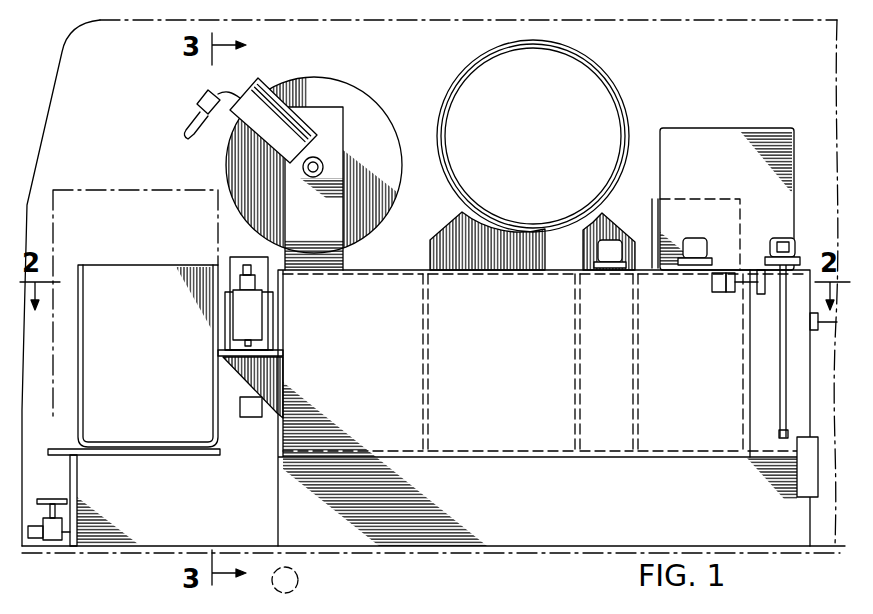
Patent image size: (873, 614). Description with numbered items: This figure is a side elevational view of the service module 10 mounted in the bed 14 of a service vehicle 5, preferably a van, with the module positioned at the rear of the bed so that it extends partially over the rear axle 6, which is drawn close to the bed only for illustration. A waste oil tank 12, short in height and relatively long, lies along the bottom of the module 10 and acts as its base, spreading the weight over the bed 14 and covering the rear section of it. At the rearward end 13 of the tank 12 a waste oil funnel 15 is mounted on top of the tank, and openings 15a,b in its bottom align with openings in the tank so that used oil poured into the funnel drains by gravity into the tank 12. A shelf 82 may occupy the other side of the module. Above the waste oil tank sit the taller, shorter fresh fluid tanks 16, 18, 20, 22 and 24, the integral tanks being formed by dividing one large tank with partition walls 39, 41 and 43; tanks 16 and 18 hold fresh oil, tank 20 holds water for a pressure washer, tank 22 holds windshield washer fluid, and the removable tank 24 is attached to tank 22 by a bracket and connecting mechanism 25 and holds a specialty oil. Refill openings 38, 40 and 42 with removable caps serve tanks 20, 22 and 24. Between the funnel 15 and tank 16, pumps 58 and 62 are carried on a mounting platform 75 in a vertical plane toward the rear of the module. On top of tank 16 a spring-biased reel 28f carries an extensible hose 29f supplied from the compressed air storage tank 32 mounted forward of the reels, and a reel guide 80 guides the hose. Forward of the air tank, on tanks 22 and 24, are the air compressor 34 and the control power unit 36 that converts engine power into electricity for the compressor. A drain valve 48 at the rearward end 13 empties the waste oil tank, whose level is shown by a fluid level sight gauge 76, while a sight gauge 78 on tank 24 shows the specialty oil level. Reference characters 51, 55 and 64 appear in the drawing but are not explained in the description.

The service vehicle 5 is at (56, 48).
The service module 10 is at (782, 74).
The waste oil tank 12 is at (515, 522).
The rearward end 13 is at (72, 560).
The bed 14 is at (812, 540).
The waste oil funnel 15 is at (146, 383).
The openings 15a,b is at (140, 457).
The fresh fluid tank 16 is at (352, 388).
The fresh fluid tank 18 is at (494, 388).
The fresh fluid tank 20 is at (610, 385).
The fresh fluid tank 22 is at (692, 385).
The fresh fluid tank 24 is at (750, 400).
The bracket and associated connecting mechanism 25 is at (800, 488).
The rotatable reel 28f is at (340, 90).
The extensible hose 29f is at (240, 92).
The compressed air storage tank 32 is at (536, 133).
The air compressor 34 is at (719, 168).
The control power unit 36 is at (628, 205).
The opening 38 is at (592, 216).
The partition wall 39 is at (429, 307).
The opening 40 is at (690, 238).
The partition wall 41 is at (578, 322).
The opening 42 is at (790, 238).
The partition wall 43 is at (640, 318).
The drain valve 48 is at (32, 520).
The base chamber 51 is at (600, 504).
The chamber 55 is at (492, 414).
The pump 58 is at (226, 262).
The pump 62 is at (265, 316).
The nozzle 64 is at (200, 110).
The mounting platform 75 is at (218, 351).
The fluid level sight gauge 76 is at (77, 483).
The sight gauge 78 is at (783, 345).
The reel guide 80 is at (333, 158).
The shelf 82 is at (110, 190).
The rear axle 6 is at (300, 575).